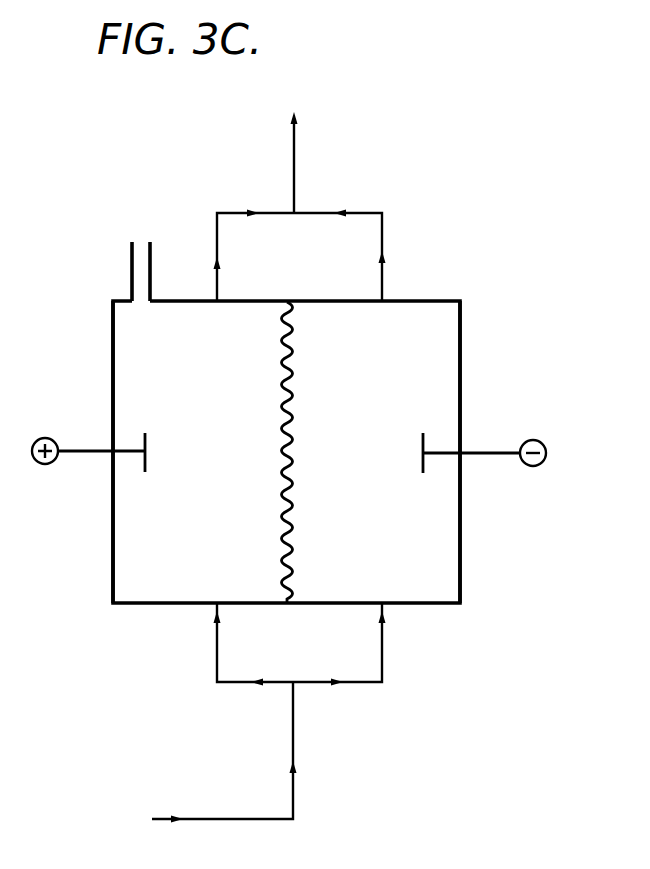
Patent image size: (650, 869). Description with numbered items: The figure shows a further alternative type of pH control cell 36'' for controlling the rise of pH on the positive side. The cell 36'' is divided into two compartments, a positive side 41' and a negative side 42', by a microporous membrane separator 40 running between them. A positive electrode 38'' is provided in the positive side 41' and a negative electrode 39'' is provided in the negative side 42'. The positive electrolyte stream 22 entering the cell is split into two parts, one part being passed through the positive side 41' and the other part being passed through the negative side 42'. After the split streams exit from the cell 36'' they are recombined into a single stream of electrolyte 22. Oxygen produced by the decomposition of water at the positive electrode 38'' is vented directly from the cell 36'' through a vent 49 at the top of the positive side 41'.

The electrolyte 22 is at (269, 467).
The cell 36'' is at (349, 452).
The positive electrode 38'' is at (87, 431).
The negative electrode 39'' is at (484, 424).
The microporous membrane separator 40 is at (280, 538).
The positive side compartment 41' is at (91, 452).
The negative side compartment 42' is at (473, 452).
The vent 49 is at (132, 258).